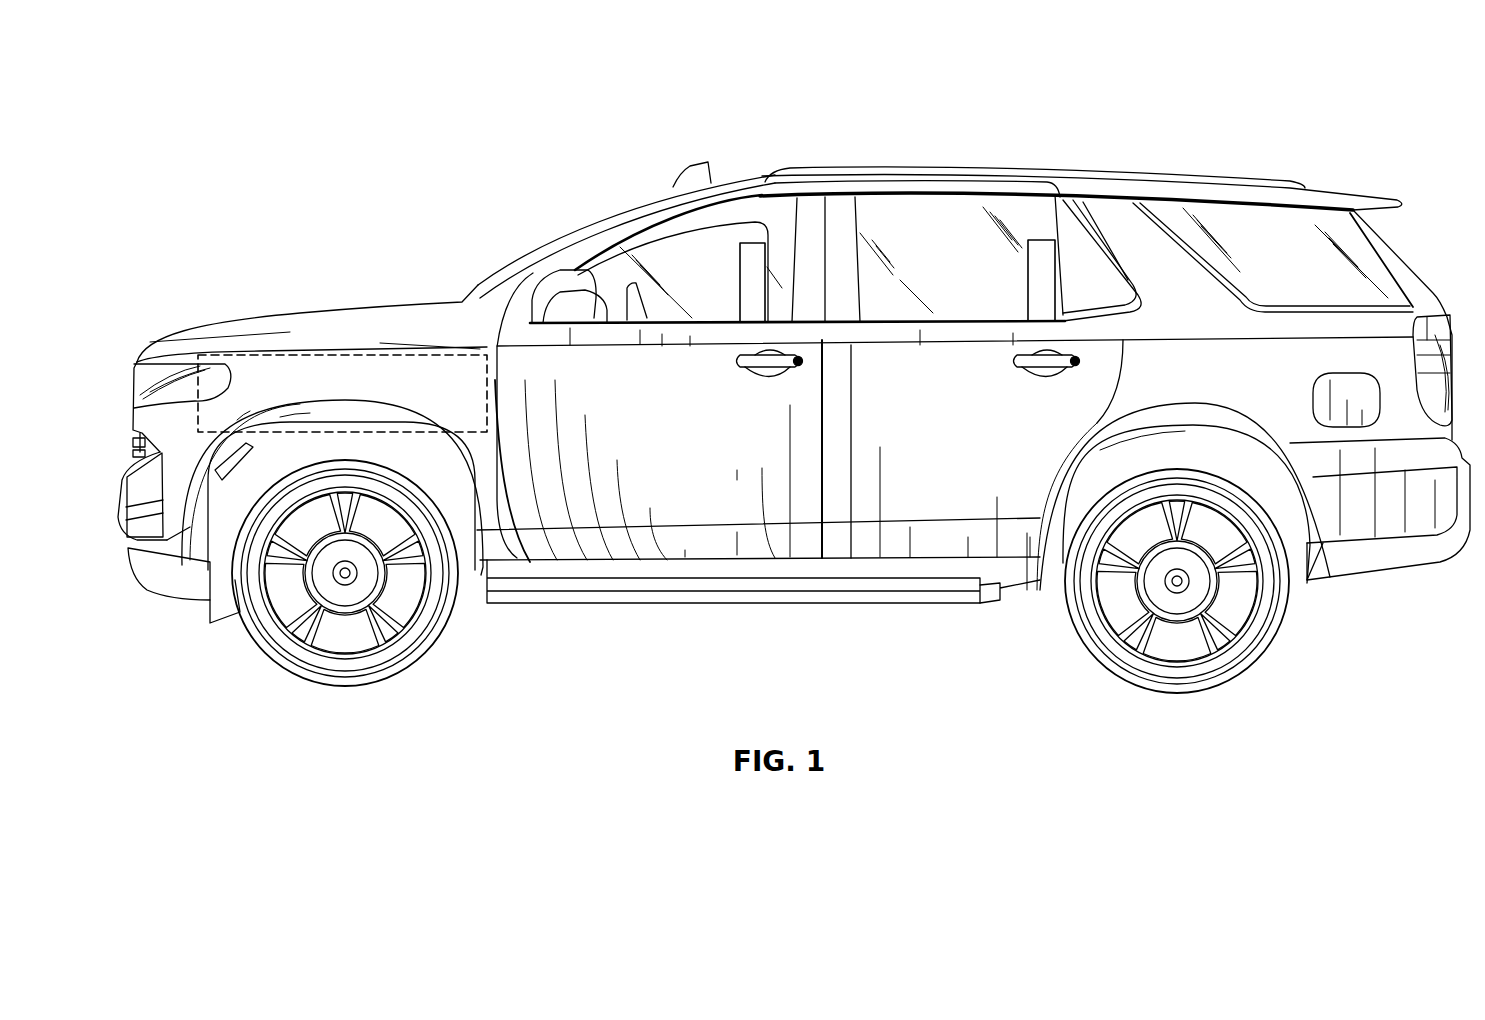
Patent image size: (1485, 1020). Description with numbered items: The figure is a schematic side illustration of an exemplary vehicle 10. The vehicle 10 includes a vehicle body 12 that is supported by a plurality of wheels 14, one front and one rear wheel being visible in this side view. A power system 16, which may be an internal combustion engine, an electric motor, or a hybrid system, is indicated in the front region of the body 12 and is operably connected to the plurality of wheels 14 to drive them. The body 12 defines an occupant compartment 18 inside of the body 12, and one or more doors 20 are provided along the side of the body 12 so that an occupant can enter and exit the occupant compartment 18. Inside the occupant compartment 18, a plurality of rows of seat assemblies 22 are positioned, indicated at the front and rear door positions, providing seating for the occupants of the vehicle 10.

The vehicle 10 is at (165, 136).
The vehicle body 12 is at (1108, 188).
The wheels 14 is at (408, 668).
The power system 16 is at (357, 350).
The occupant compartment 18 is at (915, 245).
The doors 20 is at (733, 497).
The seat assemblies 22 is at (752, 243).